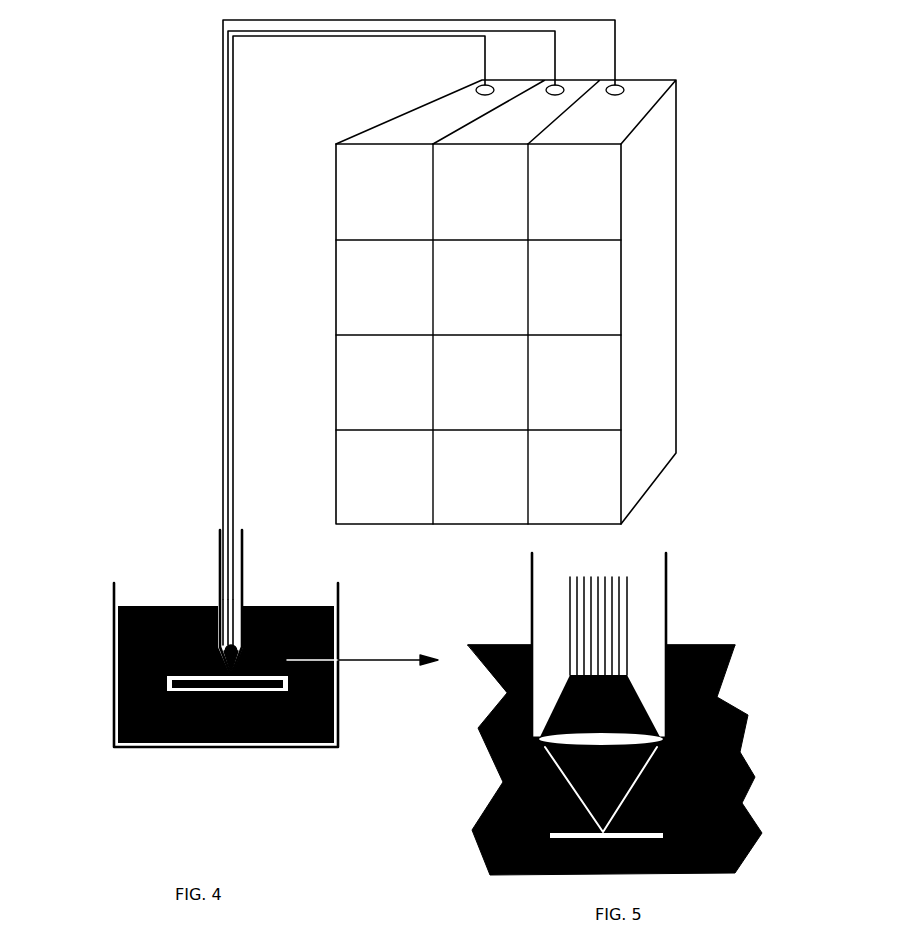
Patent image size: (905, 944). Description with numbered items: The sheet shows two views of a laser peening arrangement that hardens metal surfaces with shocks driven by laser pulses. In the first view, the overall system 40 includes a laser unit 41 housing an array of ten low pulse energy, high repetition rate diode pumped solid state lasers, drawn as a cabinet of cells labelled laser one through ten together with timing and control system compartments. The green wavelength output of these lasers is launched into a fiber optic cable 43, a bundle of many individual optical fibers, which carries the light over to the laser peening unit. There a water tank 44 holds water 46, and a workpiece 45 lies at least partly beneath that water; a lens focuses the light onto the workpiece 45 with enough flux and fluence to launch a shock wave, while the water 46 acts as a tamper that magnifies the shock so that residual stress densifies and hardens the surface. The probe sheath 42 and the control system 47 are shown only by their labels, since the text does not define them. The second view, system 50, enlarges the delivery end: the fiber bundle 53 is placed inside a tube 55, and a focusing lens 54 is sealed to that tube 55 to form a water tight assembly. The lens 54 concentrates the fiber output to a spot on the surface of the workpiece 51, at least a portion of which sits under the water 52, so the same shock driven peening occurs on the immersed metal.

In FIG. 4, the laser peening system 40 is at (120, 240).
In FIG. 4, the laser unit 41 is at (655, 230).
In FIG. 4, the probe sheath 42 is at (217, 553).
In FIG. 4, the fiber optic cable 43 is at (226, 460).
In FIG. 4, the water tank 44 is at (345, 624).
In FIG. 4, the workpiece 45 is at (338, 708).
In FIG. 4, the water 46 is at (597, 356).
In FIG. 4, the control system 47 is at (592, 455).
In FIG. 5, the laser peening system 50 is at (775, 553).
In FIG. 5, the workpiece 51 is at (742, 805).
In FIG. 5, the water 52 is at (735, 648).
In FIG. 5, the fiber optic cable 53 is at (632, 577).
In FIG. 5, the focusing lens 54 is at (748, 767).
In FIG. 5, the tube 55 is at (532, 603).